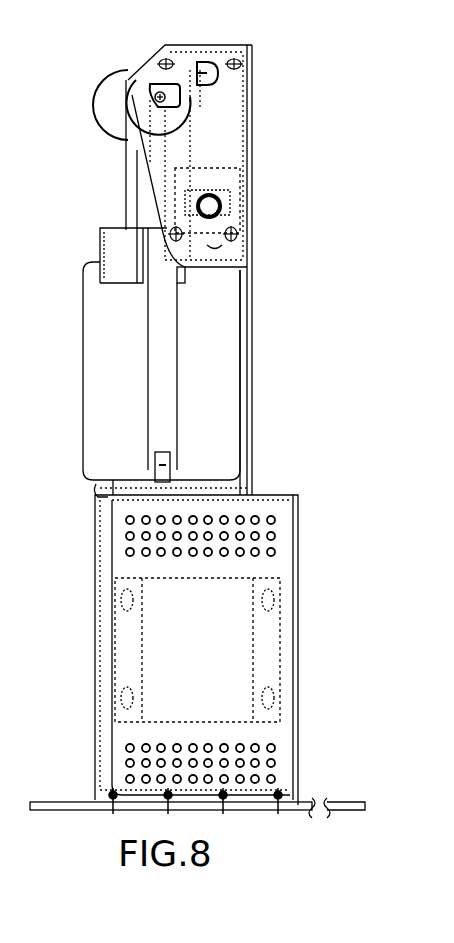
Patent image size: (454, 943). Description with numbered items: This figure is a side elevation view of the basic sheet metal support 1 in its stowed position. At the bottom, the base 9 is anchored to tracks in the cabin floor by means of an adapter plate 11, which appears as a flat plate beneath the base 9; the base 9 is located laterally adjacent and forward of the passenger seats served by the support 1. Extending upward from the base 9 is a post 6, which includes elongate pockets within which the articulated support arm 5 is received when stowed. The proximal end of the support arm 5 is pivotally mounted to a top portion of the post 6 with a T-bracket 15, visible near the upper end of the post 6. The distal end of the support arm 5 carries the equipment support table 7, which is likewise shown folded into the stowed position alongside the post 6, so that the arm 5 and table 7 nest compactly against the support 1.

The support 1 is at (263, 393).
The support arm 5 is at (160, 300).
The post 6 is at (252, 313).
The equipment support table 7 is at (97, 383).
The base 9 is at (300, 632).
The adapter plate 11 is at (350, 802).
The T-bracket 15 is at (127, 83).